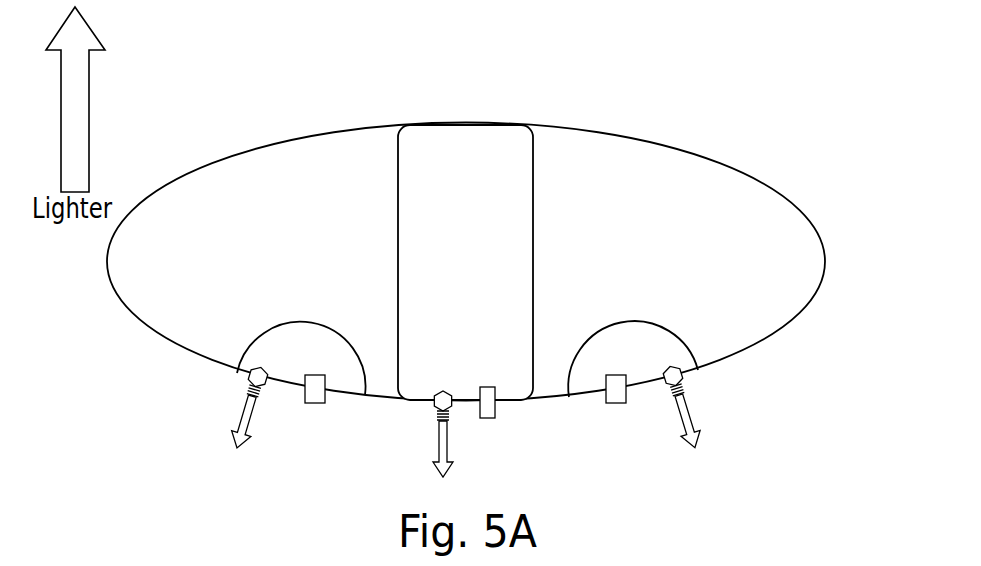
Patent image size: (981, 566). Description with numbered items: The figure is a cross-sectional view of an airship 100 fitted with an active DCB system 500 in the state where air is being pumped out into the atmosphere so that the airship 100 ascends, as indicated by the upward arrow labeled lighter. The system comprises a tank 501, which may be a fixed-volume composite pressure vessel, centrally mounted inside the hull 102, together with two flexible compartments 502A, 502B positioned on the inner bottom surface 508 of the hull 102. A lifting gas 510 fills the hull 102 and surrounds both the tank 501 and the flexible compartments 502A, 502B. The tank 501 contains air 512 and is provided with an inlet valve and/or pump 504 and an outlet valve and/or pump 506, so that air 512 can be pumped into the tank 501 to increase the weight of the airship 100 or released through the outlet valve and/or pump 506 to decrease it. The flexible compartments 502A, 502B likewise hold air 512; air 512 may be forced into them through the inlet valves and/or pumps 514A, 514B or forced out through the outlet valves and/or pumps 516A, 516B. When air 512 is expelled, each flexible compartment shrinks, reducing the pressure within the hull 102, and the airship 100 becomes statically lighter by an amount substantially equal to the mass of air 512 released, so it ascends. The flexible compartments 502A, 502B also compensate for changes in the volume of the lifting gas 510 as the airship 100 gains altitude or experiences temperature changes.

The airship 100 is at (283, 67).
The hull 102 is at (676, 148).
The DCB system 500 is at (273, 243).
The tank 501 is at (537, 151).
The flexible compartment 502A is at (302, 322).
The flexible compartment 502B is at (640, 322).
The inlet valve and/or pump 504 is at (487, 387).
The outlet valve and/or pump 506 is at (447, 405).
The inner bottom surface 508 is at (380, 398).
The lifting gas 510 is at (718, 234).
The air 512 is at (487, 276).
The inlet valve and/or pump 514A is at (318, 403).
The inlet valve and/or pump 514B is at (620, 403).
The outlet valve and/or pump 516A is at (248, 378).
The outlet valve and/or pump 516B is at (684, 376).